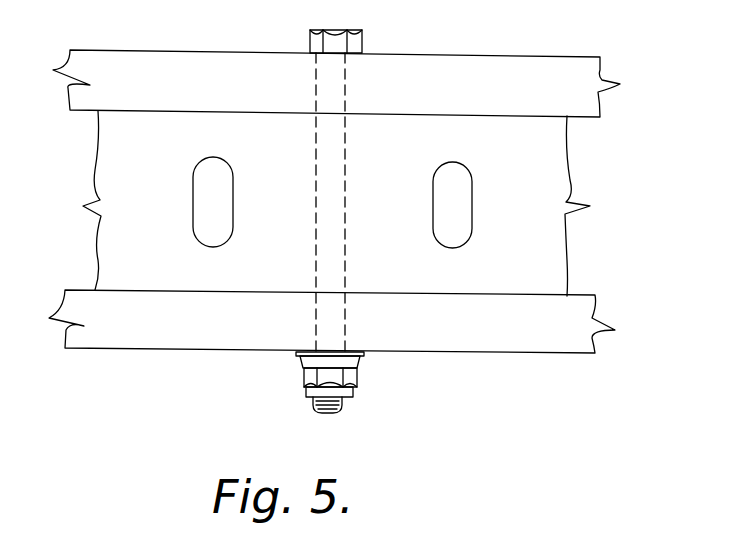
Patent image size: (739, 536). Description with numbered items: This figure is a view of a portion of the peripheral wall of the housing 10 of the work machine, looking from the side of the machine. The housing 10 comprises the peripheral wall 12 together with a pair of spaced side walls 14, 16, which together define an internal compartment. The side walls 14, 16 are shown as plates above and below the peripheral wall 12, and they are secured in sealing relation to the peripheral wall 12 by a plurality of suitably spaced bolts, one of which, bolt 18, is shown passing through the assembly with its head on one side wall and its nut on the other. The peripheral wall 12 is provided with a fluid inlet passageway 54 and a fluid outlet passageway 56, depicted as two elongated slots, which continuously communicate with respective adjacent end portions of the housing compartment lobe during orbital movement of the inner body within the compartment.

The housing 10 is at (466, 52).
The peripheral wall 12 is at (556, 260).
The side wall 14 is at (203, 62).
The side wall 16 is at (216, 340).
The bolt 18 is at (352, 42).
The fluid inlet passageway 54 is at (227, 204).
The fluid outlet passageway 56 is at (470, 204).